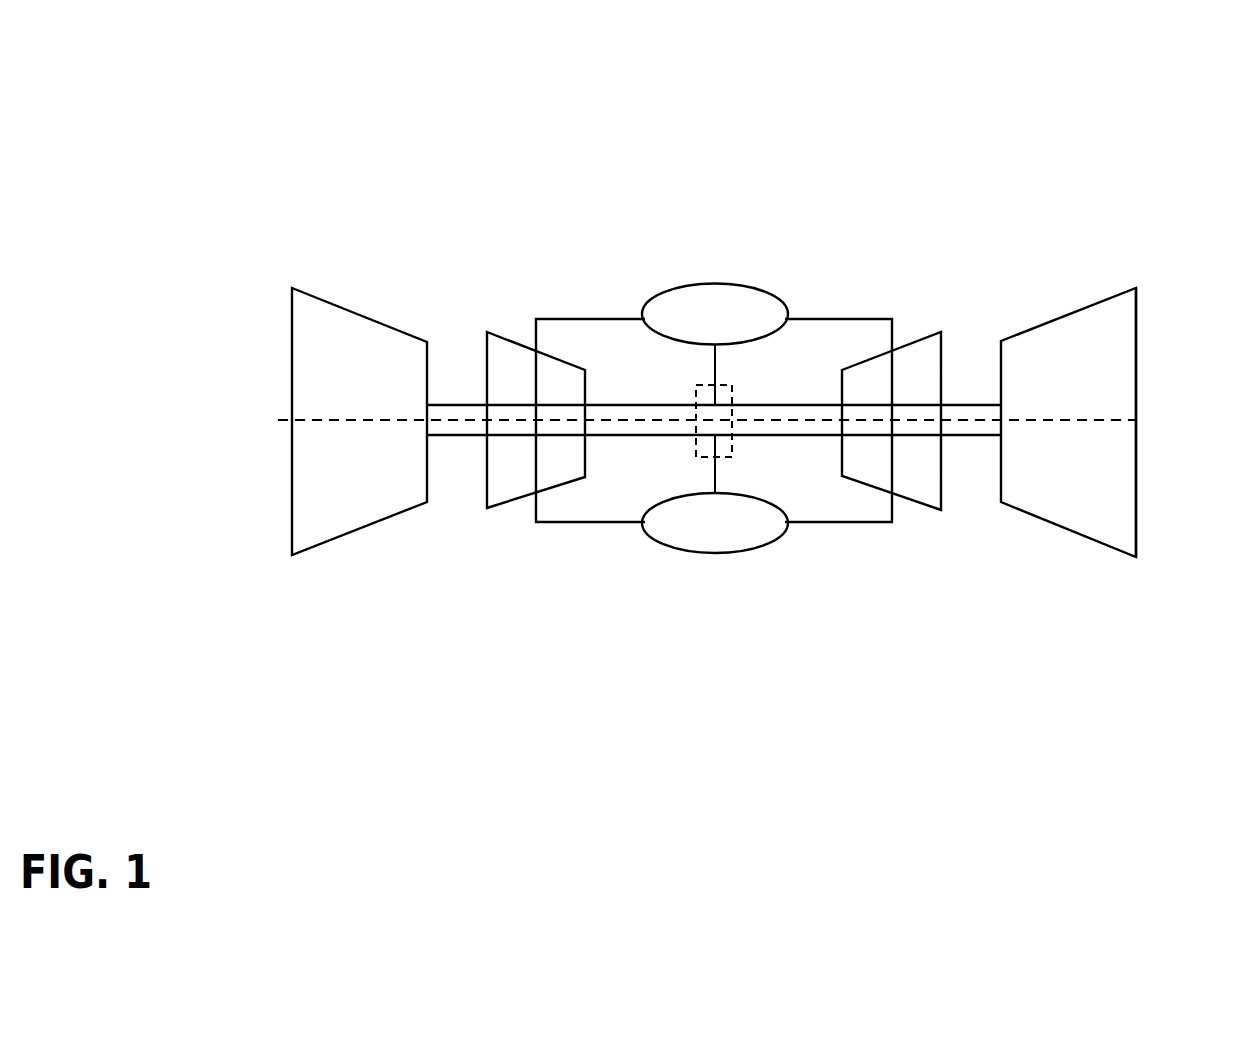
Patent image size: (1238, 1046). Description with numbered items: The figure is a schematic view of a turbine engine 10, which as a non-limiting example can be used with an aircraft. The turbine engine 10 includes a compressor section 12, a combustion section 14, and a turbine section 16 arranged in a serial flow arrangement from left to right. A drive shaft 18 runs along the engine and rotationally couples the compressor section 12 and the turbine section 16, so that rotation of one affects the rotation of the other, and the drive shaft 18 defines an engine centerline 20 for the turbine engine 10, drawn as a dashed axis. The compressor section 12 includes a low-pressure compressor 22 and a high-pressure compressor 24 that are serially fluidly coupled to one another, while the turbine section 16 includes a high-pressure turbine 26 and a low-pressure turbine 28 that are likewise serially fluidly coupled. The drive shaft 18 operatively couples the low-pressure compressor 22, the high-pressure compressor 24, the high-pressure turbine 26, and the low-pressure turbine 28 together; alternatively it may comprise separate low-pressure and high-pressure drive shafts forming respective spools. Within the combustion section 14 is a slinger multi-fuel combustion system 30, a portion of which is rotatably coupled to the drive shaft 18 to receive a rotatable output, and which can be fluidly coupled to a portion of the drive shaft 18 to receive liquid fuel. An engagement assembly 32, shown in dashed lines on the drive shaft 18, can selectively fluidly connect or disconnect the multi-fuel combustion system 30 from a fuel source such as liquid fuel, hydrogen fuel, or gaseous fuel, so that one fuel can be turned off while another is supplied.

The turbine engine 10 is at (330, 62).
The compressor section 12 is at (427, 212).
The combustion section 14 is at (731, 572).
The turbine section 16 is at (1009, 260).
The drive shaft 18 is at (777, 404).
The engine centerline 20 is at (1176, 422).
The low-pressure compressor 22 is at (395, 328).
The high-pressure compressor 24 is at (487, 508).
The high-pressure turbine 26 is at (941, 362).
The low-pressure turbine 28 is at (1136, 338).
The multi-fuel combustion system 30 is at (673, 547).
The engagement assembly 32 is at (693, 453).